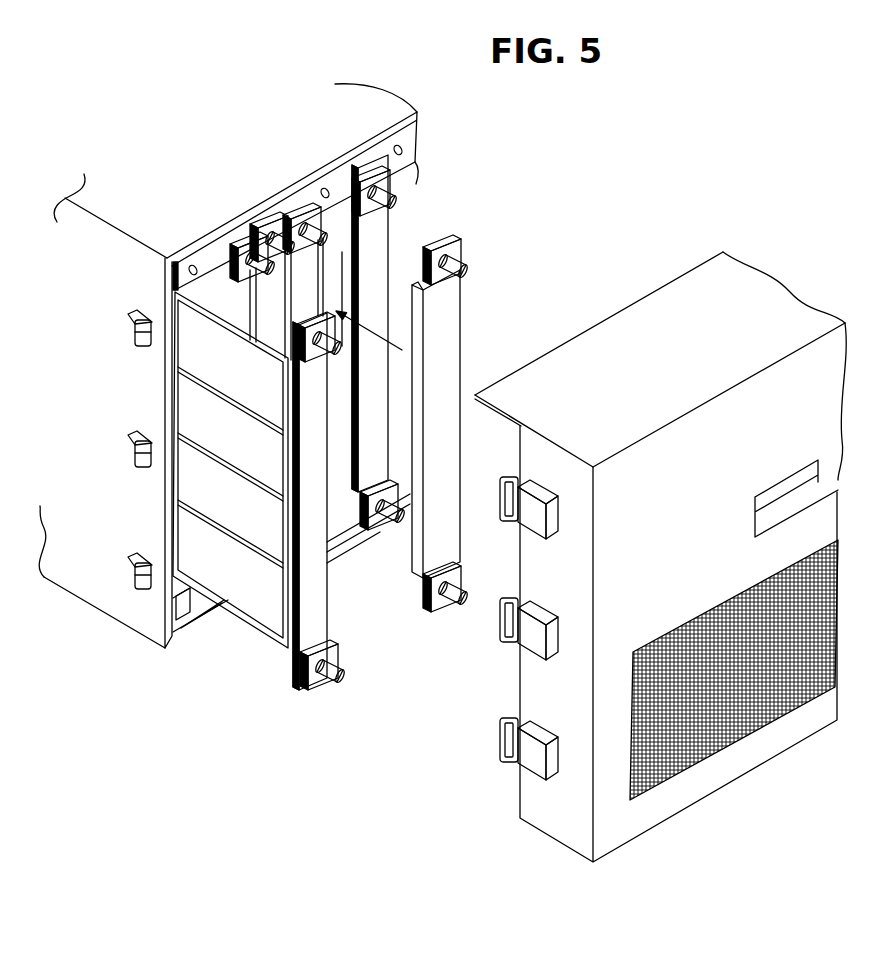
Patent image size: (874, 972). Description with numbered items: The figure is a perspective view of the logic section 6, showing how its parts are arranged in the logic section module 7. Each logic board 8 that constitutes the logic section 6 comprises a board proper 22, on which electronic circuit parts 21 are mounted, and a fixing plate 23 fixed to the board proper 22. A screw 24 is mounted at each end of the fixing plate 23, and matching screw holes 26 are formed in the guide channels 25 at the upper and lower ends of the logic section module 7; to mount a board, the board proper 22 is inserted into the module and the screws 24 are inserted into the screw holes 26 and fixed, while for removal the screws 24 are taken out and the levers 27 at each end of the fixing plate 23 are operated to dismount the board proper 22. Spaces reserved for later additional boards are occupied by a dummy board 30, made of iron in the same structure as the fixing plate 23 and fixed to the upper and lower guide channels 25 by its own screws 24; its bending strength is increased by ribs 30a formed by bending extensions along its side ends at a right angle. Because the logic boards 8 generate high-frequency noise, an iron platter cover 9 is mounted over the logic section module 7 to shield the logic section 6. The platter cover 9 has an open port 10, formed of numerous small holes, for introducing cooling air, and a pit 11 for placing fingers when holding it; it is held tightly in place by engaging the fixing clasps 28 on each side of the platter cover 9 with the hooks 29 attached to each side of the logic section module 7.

The logic section 6 is at (306, 459).
The logic section module 7 is at (97, 604).
The logic board 8 is at (328, 564).
The platter cover 9 is at (707, 793).
The open port 10 is at (745, 700).
The pit 11 is at (790, 487).
The electronic circuit parts 21 is at (247, 588).
The board proper 22 is at (278, 634).
The fixing plate 23 is at (320, 603).
The screw 24 is at (463, 267).
The guide channel 25 is at (212, 255).
The screw hole 26 is at (392, 124).
The lever 27 is at (327, 363).
The fixing clasp 28 is at (508, 522).
The hook 29 is at (130, 340).
The dummy board 30 is at (446, 377).
The rib 30a is at (418, 328).